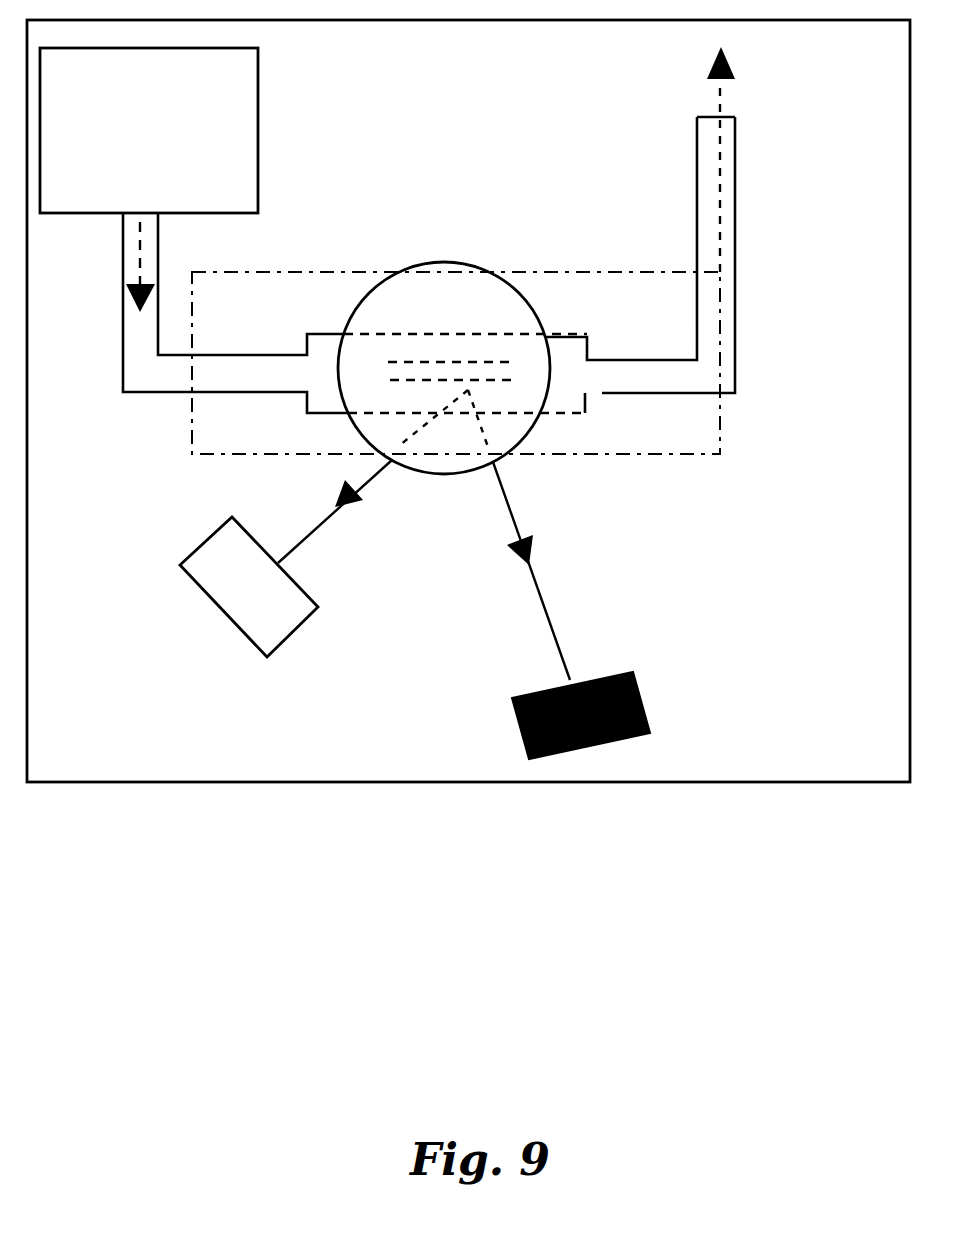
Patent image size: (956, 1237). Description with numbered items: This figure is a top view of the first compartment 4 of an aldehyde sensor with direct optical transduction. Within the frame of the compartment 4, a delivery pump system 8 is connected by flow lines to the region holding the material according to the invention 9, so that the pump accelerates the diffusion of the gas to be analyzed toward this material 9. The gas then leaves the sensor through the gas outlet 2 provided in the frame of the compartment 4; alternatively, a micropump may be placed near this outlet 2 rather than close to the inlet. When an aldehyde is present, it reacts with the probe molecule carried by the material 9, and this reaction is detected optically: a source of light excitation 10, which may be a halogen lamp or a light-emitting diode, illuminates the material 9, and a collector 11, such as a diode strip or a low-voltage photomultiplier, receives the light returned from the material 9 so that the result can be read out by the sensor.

The gas outlet 2 is at (640, 222).
The first compartment 4 is at (468, 401).
The delivery pump system 8 is at (149, 130).
The material according to the invention 9 is at (457, 318).
The source of light excitation 10 is at (275, 567).
The collector 11 is at (602, 610).